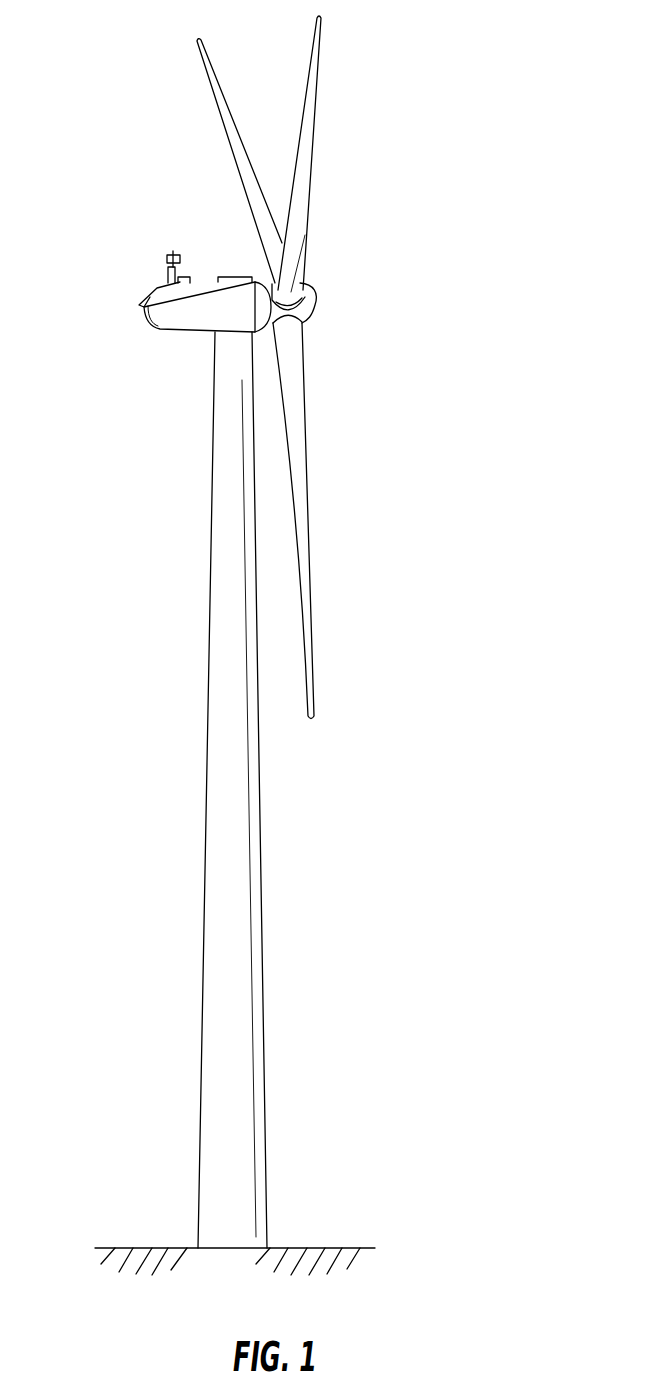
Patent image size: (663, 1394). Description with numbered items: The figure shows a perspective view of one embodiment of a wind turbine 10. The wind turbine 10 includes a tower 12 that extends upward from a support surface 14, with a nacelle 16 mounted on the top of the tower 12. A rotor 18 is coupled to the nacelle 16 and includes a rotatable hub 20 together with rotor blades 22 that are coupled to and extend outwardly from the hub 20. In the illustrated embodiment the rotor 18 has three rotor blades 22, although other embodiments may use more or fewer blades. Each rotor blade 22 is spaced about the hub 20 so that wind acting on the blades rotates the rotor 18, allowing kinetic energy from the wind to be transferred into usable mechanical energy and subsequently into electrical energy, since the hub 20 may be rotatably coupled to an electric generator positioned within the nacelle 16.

The wind turbine 10 is at (447, 142).
The tower 12 is at (215, 798).
The support surface 14 is at (116, 1248).
The nacelle 16 is at (176, 331).
The rotor 18 is at (322, 279).
The rotatable hub 20 is at (312, 313).
The rotor blade 22 is at (232, 115).